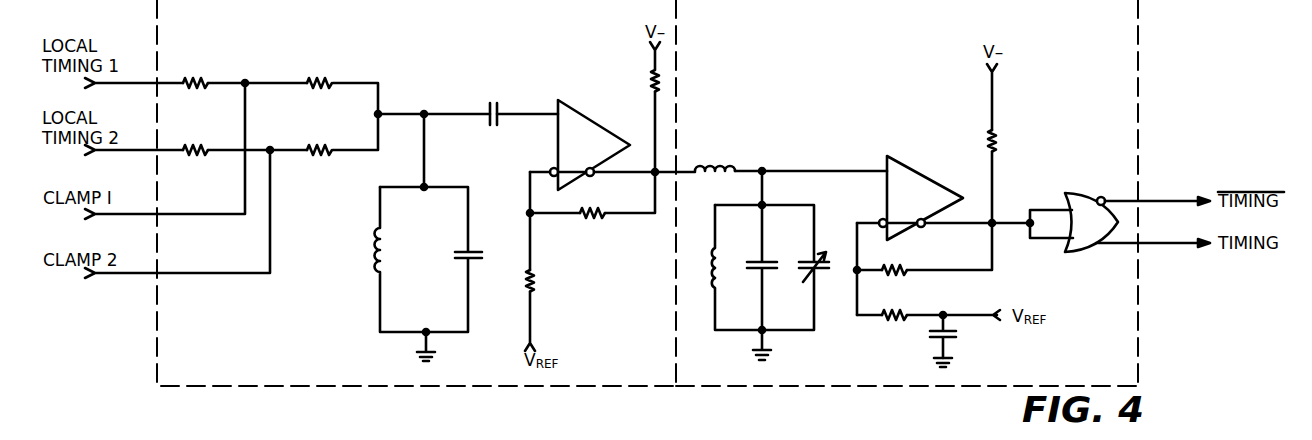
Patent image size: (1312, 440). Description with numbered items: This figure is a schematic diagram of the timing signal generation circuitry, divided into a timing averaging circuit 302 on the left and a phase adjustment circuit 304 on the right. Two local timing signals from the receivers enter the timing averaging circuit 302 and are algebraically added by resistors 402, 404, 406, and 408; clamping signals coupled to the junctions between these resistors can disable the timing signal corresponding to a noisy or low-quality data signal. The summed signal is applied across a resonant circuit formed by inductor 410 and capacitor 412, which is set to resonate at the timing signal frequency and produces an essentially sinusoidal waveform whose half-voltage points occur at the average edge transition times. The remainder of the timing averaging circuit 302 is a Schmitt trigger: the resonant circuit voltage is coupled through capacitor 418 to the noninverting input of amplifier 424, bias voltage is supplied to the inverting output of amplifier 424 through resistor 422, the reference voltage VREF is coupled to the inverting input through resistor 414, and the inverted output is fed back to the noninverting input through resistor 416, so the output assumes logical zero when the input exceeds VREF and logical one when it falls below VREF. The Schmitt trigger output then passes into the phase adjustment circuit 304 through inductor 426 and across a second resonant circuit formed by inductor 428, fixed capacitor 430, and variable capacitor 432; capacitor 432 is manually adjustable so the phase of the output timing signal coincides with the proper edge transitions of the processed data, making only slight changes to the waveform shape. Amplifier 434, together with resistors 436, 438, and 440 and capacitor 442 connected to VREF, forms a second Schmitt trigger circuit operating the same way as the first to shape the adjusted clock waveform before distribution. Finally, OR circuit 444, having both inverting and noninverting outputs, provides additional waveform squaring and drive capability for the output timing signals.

The timing averaging circuit 302 is at (595, 388).
The phase adjustment circuit 304 is at (763, 388).
The resistor 402 is at (197, 78).
The resistor 404 is at (329, 78).
The resistor 406 is at (199, 146).
The resistor 408 is at (336, 145).
The inductor 410 is at (375, 265).
The capacitor 412 is at (457, 255).
The resistor 414 is at (535, 283).
The resistor 416 is at (586, 216).
The capacitor 418 is at (490, 105).
The resistor 422 is at (650, 73).
The amplifier 424 is at (627, 133).
The inductor 426 is at (738, 166).
The inductor 428 is at (713, 288).
The fixed capacitor 430 is at (753, 260).
The variable capacitor 432 is at (822, 247).
The amplifier 434 is at (905, 158).
The resistor 436 is at (996, 137).
The resistor 438 is at (900, 265).
The resistor 440 is at (905, 312).
The capacitor 442 is at (957, 333).
The OR circuit 444 is at (1083, 195).